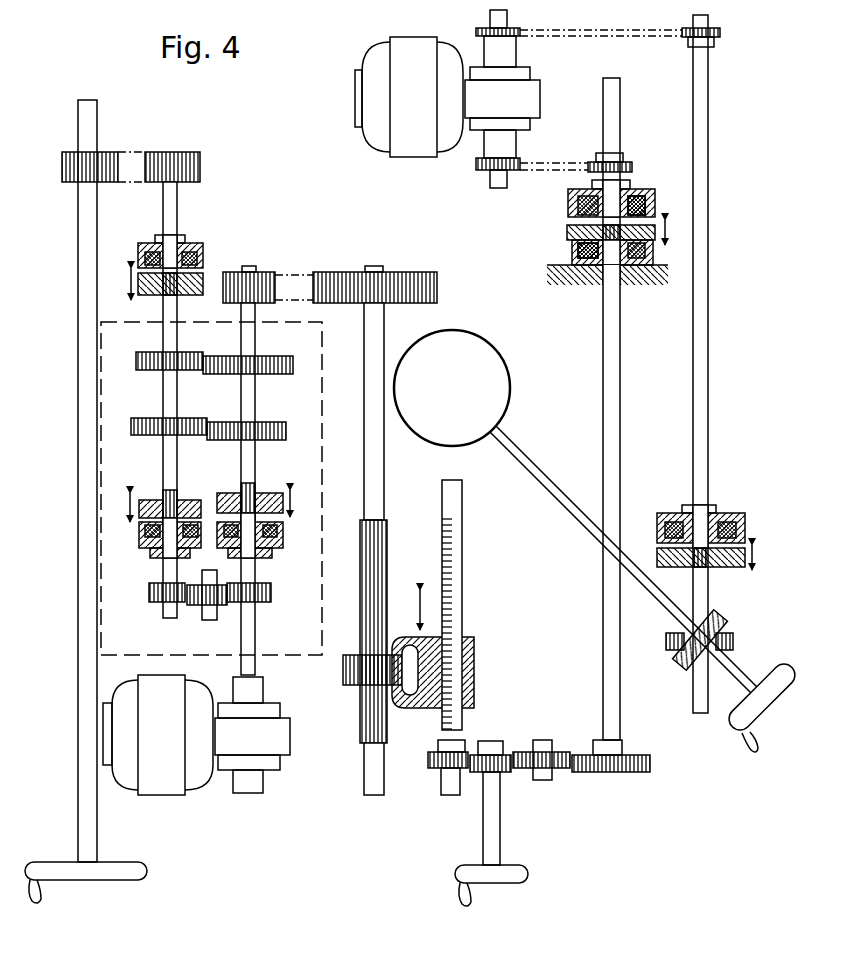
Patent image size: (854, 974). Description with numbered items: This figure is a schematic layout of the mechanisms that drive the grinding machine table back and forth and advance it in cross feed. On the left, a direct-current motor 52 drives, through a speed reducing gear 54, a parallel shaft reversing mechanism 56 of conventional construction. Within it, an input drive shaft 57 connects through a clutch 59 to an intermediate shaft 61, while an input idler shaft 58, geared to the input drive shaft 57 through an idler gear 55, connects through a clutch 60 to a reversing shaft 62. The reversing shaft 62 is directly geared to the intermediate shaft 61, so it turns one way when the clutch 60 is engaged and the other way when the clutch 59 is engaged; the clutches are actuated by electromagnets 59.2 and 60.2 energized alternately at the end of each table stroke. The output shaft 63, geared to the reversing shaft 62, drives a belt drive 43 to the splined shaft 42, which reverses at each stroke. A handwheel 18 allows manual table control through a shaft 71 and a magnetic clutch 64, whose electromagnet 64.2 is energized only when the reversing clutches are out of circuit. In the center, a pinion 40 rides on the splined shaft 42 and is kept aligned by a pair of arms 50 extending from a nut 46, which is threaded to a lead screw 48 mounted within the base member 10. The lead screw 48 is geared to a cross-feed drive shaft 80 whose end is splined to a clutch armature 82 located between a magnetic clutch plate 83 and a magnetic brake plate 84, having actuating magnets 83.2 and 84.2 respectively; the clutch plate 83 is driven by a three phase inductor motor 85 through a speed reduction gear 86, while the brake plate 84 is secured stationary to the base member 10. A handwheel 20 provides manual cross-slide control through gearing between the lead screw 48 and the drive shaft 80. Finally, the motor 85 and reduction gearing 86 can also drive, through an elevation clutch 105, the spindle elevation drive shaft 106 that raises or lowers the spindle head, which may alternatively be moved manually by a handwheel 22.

The base member 10 is at (583, 284).
The handwheel 18 is at (92, 872).
The handwheel 20 is at (492, 876).
The handwheel 22 is at (752, 716).
The pinion 40 is at (350, 686).
The splined shaft 42 is at (358, 740).
The belt drive 43 is at (296, 276).
The nut 46 is at (477, 676).
The lead screw 48 is at (465, 606).
The arms 50 is at (403, 706).
The D. C. motor 52 is at (158, 735).
The speed reducing gear 54 is at (252, 735).
The idler gear 55 is at (200, 615).
The parallel shaft reversing mechanism 56 is at (322, 432).
The input drive shaft 57 is at (255, 634).
The input idler shaft 58 is at (160, 590).
The clutch 59 is at (286, 528).
The electromagnet 59.2 is at (272, 558).
The clutch 60 is at (139, 526).
The electromagnet 60.2 is at (155, 553).
The intermediate shaft 61 is at (255, 467).
The reversing shaft 62 is at (176, 403).
The output shaft 63 is at (255, 341).
The magnetic clutch 64 is at (209, 268).
The electromagnet 64.2 is at (195, 254).
The shaft 71 is at (177, 208).
The cross-feed drive shaft 80 is at (605, 654).
The clutch armature 82 is at (567, 232).
The magnetic clutch plate 83 is at (568, 202).
The actuating magnet 83.2 is at (636, 200).
The magnetic brake plate 84 is at (572, 250).
The actuating magnet 84.2 is at (565, 264).
The three phase inductor motor 85 is at (409, 97).
The speed reduction gear 86 is at (573, 99).
The elevation clutch 105 is at (754, 532).
The spindle elevation drive shaft 106 is at (538, 473).